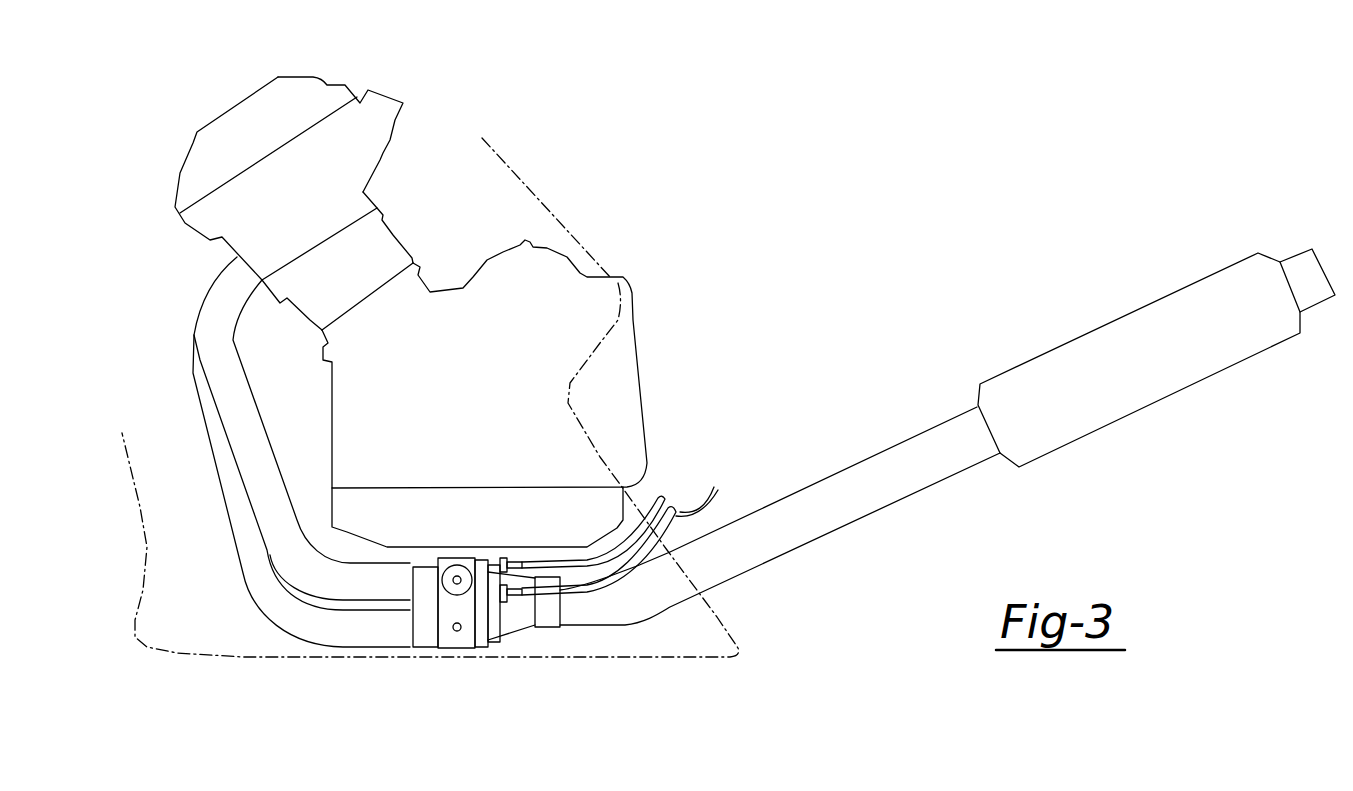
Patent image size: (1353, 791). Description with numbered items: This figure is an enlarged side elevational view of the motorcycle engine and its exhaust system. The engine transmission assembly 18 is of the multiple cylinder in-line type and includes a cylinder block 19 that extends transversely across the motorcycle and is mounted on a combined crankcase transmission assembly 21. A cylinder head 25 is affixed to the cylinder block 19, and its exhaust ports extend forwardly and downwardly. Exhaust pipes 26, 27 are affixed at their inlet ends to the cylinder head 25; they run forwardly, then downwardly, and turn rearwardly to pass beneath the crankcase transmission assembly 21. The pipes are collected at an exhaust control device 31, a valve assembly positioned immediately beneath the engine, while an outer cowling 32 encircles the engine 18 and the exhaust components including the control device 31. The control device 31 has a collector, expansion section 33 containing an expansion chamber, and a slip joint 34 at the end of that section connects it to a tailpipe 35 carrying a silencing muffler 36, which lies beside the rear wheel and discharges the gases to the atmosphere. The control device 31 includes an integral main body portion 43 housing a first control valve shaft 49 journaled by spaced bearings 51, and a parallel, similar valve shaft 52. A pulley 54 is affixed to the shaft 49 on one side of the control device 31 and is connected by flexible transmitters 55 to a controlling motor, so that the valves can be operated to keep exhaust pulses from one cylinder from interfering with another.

The engine transmission assembly 18 is at (524, 393).
The cylinder block 19 is at (393, 235).
The combined crankcase transmission assembly 21 is at (645, 403).
The cylinder head 25 is at (372, 175).
The exhaust pipe 26 is at (265, 433).
The exhaust pipe 27 is at (210, 462).
The exhaust control device 31 is at (450, 650).
The outer cowling 32 is at (188, 653).
The collector, expansion section 33 is at (520, 633).
The slip joint 34 is at (553, 628).
The tailpipe 35 is at (793, 553).
The silencing muffler 36 is at (1040, 352).
The main body portion 43 is at (475, 648).
The first control valve shaft 49 is at (443, 580).
The bearings 51 is at (500, 607).
The valve shaft 52 is at (452, 627).
The pulley 54 is at (460, 567).
The flexible transmitters 55 is at (718, 490).